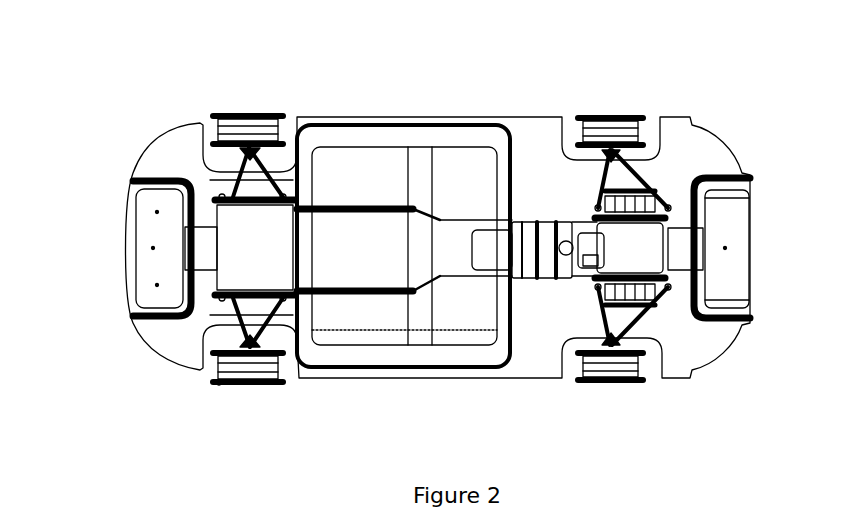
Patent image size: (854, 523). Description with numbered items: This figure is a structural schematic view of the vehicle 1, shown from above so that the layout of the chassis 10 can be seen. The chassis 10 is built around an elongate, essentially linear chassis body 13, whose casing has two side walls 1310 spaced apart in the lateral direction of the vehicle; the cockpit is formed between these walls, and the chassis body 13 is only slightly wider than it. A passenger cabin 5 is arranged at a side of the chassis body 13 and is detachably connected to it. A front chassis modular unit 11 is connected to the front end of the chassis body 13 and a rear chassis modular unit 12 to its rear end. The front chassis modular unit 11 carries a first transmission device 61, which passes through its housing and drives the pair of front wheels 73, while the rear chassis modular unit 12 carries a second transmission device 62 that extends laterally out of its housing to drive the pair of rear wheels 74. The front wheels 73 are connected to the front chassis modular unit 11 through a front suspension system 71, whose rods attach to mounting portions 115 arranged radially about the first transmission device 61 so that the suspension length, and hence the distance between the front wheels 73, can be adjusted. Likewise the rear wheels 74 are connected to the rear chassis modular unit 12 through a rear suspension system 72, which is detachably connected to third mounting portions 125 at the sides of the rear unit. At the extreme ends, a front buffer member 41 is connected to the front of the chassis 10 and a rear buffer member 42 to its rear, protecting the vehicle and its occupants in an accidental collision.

The vehicle 1 is at (152, 150).
The chassis 10 is at (446, 36).
The front chassis modular unit 11 is at (285, 235).
The rear chassis modular unit 12 is at (597, 218).
The chassis body 13 is at (434, 243).
The side walls 1310 is at (357, 203).
The passenger cabin 5 is at (393, 343).
The front buffer member 41 is at (163, 320).
The rear buffer member 42 is at (705, 320).
The first transmission device 61 is at (215, 293).
The second transmission device 62 is at (668, 208).
The front suspension system 71 is at (290, 350).
The rear suspension system 72 is at (590, 335).
The front wheels 73 is at (268, 385).
The rear wheels 74 is at (603, 387).
The mounting portions 115 is at (218, 385).
The third mounting portions 125 is at (597, 297).